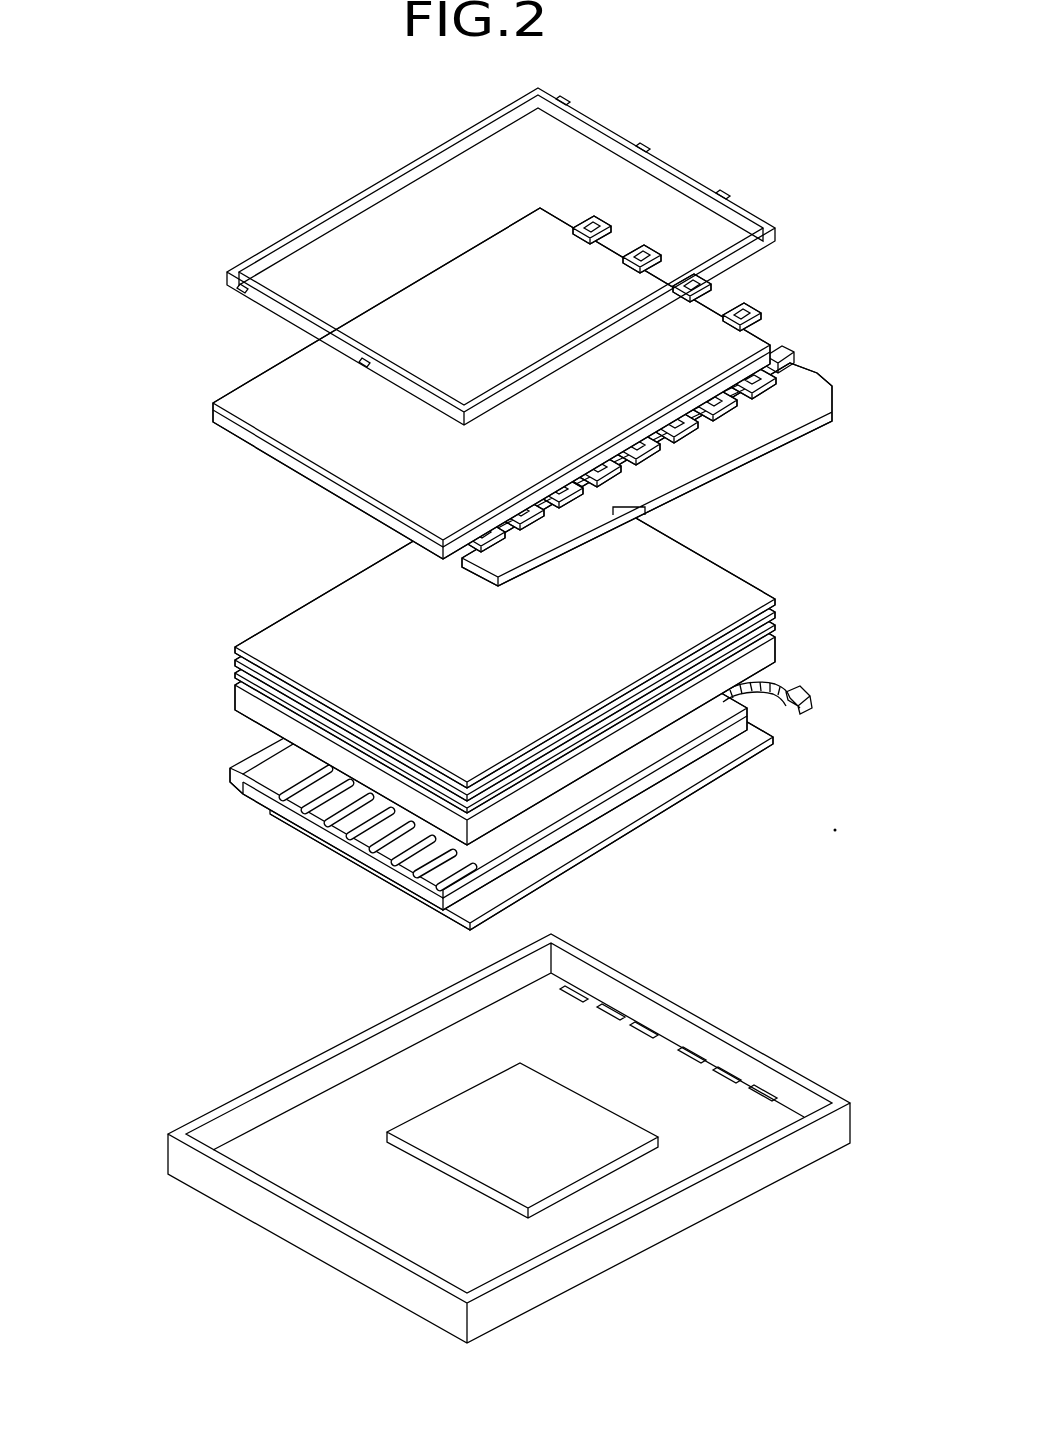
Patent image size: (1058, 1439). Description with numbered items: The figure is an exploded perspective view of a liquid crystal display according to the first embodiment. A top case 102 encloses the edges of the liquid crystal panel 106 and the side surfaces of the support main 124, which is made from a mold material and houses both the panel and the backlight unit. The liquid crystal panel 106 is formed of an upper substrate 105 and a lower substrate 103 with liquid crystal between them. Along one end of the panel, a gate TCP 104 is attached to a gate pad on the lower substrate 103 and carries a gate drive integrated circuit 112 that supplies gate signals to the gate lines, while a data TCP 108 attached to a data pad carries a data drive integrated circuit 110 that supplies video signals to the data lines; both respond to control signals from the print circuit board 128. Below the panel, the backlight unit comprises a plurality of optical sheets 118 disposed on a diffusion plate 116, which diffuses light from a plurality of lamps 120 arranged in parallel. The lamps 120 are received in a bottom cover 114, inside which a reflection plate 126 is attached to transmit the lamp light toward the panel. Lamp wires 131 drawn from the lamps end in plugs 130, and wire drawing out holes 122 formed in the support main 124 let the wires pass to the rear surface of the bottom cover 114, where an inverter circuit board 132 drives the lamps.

The top case 102 is at (657, 160).
The lower substrate 103 is at (210, 410).
The gate TCP 104 is at (608, 230).
The upper substrate 105 is at (209, 401).
The liquid crystal panel 106 is at (409, 383).
The data TCP 108 is at (795, 365).
The data drive integrated circuit 110 is at (758, 372).
The gate drive integrated circuit 112 is at (588, 225).
The bottom cover 114 is at (785, 738).
The diffusion plate 116 is at (778, 648).
The optical sheets 118 is at (778, 603).
The lamps 120 is at (473, 754).
The wire drawing out holes 122 is at (692, 1055).
The support main 124 is at (509, 1138).
The reflection plate 126 is at (330, 840).
The print circuit board 128 is at (665, 439).
The plug 130 is at (815, 708).
The lamp wires 131 is at (820, 690).
The inverter circuit board 132 is at (575, 1150).